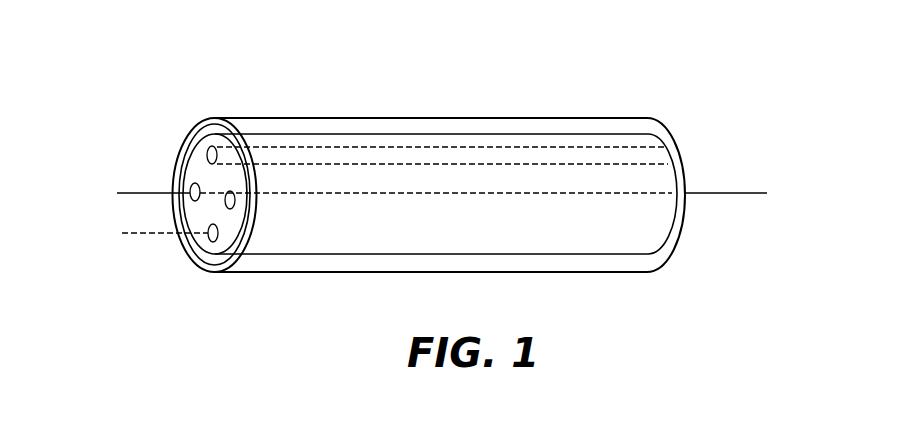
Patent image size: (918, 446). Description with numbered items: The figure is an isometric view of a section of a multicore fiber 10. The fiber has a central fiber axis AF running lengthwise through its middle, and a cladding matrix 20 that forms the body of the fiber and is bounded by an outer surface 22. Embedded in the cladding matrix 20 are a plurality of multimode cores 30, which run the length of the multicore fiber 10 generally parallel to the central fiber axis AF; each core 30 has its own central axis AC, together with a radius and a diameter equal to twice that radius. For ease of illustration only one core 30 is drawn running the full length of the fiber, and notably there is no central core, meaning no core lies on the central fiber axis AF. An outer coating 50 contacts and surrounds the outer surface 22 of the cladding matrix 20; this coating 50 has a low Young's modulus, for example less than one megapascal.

The multicore fiber 10 is at (158, 78).
The cladding matrix 20 is at (190, 168).
The outer surface 22 is at (190, 137).
The multimode cores 30 is at (201, 148).
The outer coating 50 is at (210, 265).
The central axis of core AC is at (155, 236).
The central fiber axis AF is at (733, 193).